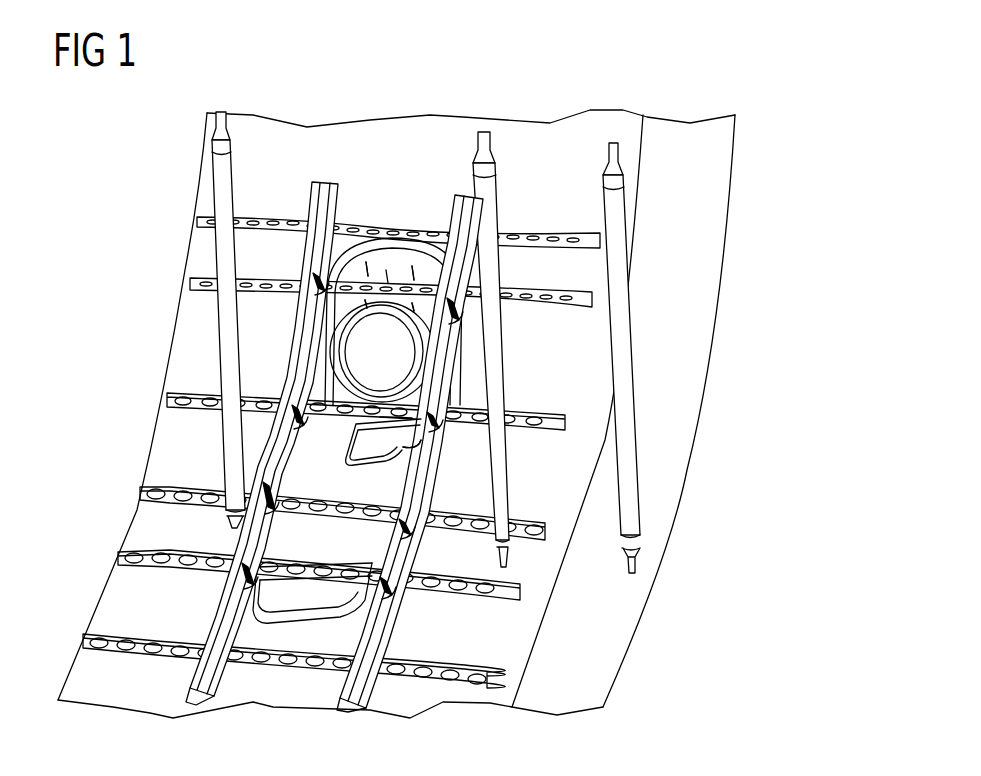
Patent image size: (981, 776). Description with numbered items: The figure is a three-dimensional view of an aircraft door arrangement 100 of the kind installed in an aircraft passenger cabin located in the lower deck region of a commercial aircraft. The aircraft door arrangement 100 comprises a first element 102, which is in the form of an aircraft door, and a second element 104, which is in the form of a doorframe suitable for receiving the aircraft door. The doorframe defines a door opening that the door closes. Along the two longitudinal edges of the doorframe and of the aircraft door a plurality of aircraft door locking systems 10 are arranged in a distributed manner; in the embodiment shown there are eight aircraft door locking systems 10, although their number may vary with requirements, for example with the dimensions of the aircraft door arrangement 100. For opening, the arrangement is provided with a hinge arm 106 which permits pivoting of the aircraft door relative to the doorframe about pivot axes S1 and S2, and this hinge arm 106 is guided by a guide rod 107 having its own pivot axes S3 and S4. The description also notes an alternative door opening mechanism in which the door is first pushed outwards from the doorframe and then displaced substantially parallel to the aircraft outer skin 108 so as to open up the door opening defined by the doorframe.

The aircraft door arrangement 100 is at (428, 391).
The aircraft outer skin 108 is at (288, 130).
The guide rod 107 is at (387, 272).
The second element 104 is at (432, 247).
The first element 102 is at (327, 373).
The hinge arm 106 is at (425, 458).
The aircraft door locking system 10 is at (315, 298).
The pivot axis S1 is at (400, 418).
The pivot axis S2 is at (420, 448).
The pivot axis S3 is at (375, 282).
The pivot axis S4 is at (415, 279).